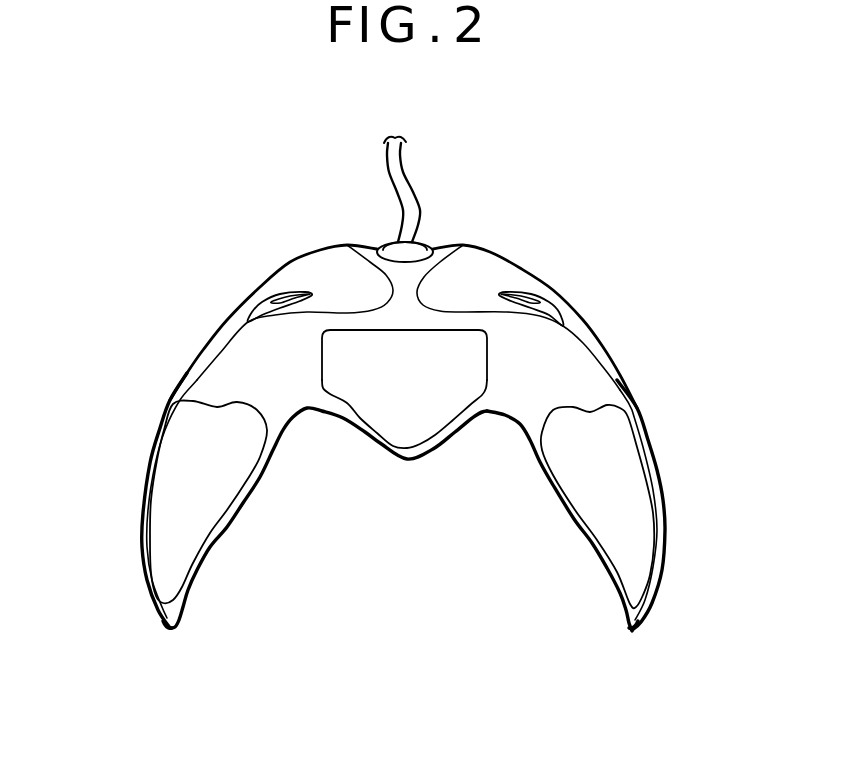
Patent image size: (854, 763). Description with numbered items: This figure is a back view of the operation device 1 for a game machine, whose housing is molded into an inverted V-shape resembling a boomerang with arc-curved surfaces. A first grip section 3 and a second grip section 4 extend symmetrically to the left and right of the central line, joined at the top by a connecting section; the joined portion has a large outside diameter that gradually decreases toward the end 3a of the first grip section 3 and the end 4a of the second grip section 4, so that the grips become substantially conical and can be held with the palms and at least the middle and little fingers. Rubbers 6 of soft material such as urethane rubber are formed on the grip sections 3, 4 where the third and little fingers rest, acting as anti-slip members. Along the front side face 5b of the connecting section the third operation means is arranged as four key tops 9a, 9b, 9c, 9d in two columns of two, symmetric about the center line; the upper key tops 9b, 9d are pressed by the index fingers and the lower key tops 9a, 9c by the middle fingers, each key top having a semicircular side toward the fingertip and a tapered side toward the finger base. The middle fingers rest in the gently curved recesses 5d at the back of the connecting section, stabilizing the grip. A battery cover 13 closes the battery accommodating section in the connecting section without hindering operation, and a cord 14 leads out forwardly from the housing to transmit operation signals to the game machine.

The operation device 1 is at (183, 357).
The first grip section 3 is at (153, 447).
The end of the grip section 3a is at (167, 618).
The second grip section 4 is at (653, 452).
The end of the grip section 4a is at (637, 618).
The front side face of the connecting section 5b is at (340, 270).
The recesses 5d is at (292, 390).
The rubbers 6 is at (183, 507).
The key top 9a is at (276, 304).
The key top 9b is at (301, 290).
The key top 9c is at (540, 308).
The key top 9d is at (507, 293).
The battery cover 13 is at (457, 372).
The cord 14 is at (413, 202).